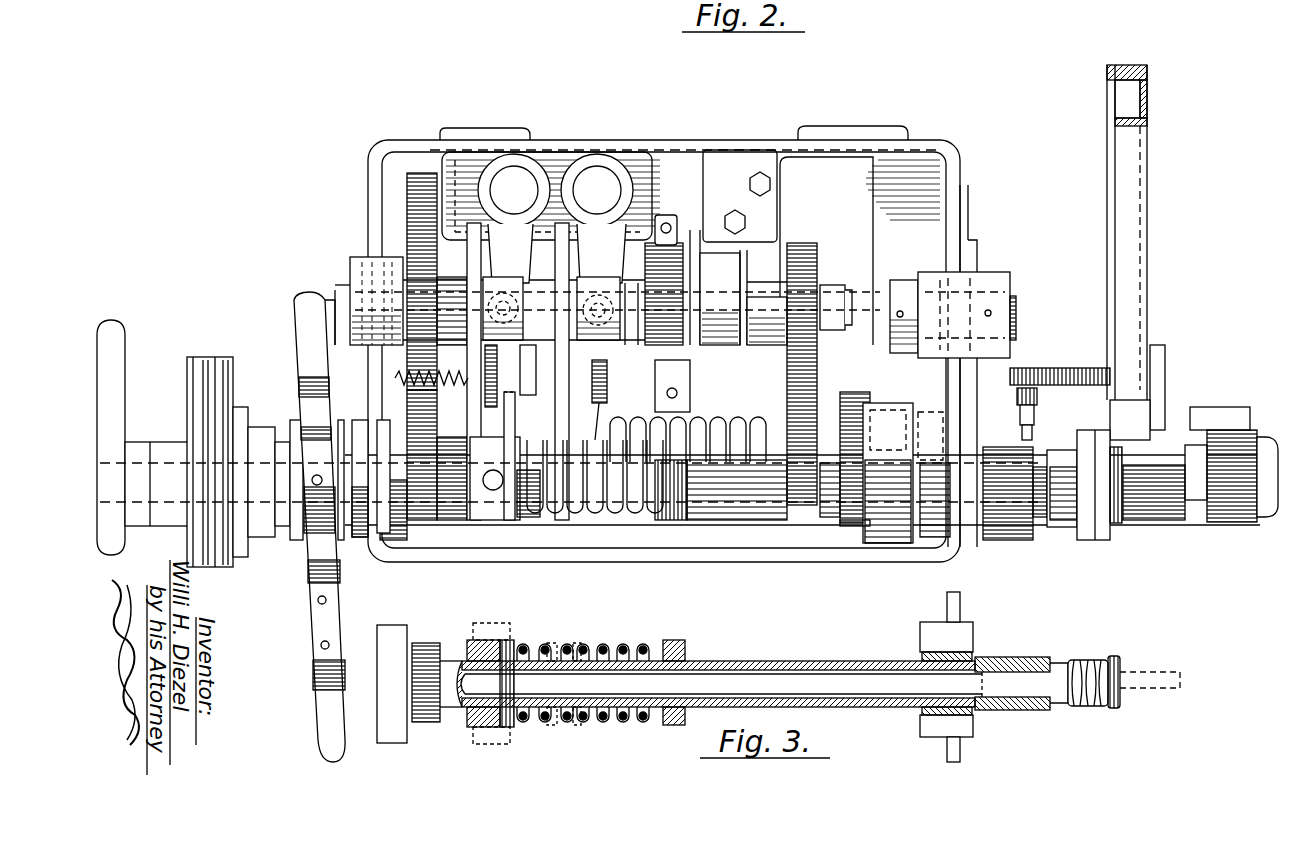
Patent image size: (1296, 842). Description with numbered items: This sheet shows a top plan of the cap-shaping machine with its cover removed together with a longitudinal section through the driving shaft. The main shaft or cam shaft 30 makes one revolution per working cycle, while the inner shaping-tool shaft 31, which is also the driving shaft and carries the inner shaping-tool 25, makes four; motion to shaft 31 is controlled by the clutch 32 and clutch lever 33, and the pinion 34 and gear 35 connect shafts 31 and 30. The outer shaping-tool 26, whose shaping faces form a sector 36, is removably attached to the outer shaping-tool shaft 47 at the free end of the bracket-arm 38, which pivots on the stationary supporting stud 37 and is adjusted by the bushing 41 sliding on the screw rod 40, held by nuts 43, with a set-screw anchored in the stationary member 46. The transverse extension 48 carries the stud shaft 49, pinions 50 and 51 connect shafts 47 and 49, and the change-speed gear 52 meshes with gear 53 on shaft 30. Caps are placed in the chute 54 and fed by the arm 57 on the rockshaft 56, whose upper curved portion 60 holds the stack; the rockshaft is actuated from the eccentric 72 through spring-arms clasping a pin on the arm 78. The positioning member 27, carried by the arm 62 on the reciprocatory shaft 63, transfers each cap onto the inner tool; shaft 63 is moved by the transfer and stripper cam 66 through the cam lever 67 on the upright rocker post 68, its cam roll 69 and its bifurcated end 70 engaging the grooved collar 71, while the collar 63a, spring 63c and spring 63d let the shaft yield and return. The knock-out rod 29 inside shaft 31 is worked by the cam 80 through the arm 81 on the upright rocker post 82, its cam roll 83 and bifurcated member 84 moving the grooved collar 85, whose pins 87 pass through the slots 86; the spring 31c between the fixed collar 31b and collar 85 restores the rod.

In FIG. 3, the inner shaping-tool 25 is at (1101, 713).
In FIG. 2, the outer shaping-tool 26 is at (1093, 542).
In FIG. 2, the positioning member 27 is at (1195, 510).
In FIG. 2, the knock-out rod 29 is at (652, 492).
In FIG. 3, the knock-out rod 29 is at (665, 692).
In FIG. 2, the main shaft 30 is at (380, 295).
In FIG. 2, the inner shaping-tool shaft 31 is at (602, 527).
In FIG. 3, the inner shaping-tool shaft 31 is at (888, 708).
In FIG. 2, the fixed collar 31b is at (692, 527).
In FIG. 3, the fixed collar 31b is at (695, 647).
In FIG. 2, the spring 31c is at (520, 527).
In FIG. 3, the spring 31c is at (646, 648).
In FIG. 2, the clutch 32 is at (296, 425).
In FIG. 2, the clutch lever 33 is at (310, 753).
In FIG. 2, the pinion 34 is at (428, 522).
In FIG. 3, the pinion 34 is at (428, 724).
In FIG. 2, the gear 35 is at (420, 173).
In FIG. 2, the sector 36 is at (1118, 528).
In FIG. 2, the stationary supporting stud 37 is at (1018, 300).
In FIG. 2, the bracket-arm 38 is at (1010, 345).
In FIG. 2, the screw rod 40 is at (1033, 428).
In FIG. 2, the bushing 41 is at (1037, 400).
In FIG. 2, the nuts 43 is at (1045, 370).
In FIG. 2, the stationary member 46 is at (931, 276).
In FIG. 2, the outer shaping-tool shaft 47 is at (932, 538).
In FIG. 3, the outer shaping-tool shaft 47 is at (940, 676).
In FIG. 2, the transverse extension 48 is at (893, 403).
In FIG. 2, the stud shaft 49 is at (930, 436).
In FIG. 2, the pinion 50 is at (858, 527).
In FIG. 2, the pinion 51 is at (852, 392).
In FIG. 2, the gear 52 is at (781, 403).
In FIG. 2, the gear 53 is at (818, 266).
In FIG. 2, the chute 54 is at (1148, 94).
In FIG. 2, the rockshaft 56 is at (720, 521).
In FIG. 2, the arm 57 is at (1166, 360).
In FIG. 2, the upper curved portion 60 is at (1135, 425).
In FIG. 2, the arm 62 is at (1238, 410).
In FIG. 2, the reciprocatory shaft 63 is at (725, 412).
In FIG. 2, the collar 63a is at (537, 370).
In FIG. 2, the spring 63c is at (768, 521).
In FIG. 2, the spring 63d is at (395, 380).
In FIG. 2, the transfer and stripper cam 66 is at (566, 225).
In FIG. 2, the cam lever 67 is at (601, 282).
In FIG. 2, the upright rocker post 68 is at (597, 190).
In FIG. 2, the cam roll 69 is at (607, 372).
In FIG. 2, the bifurcated end 70 is at (603, 410).
In FIG. 2, the grooved collar 71 is at (612, 508).
In FIG. 2, the eccentric 72 is at (695, 240).
In FIG. 2, the arm 78 is at (692, 394).
In FIG. 2, the cam 80 is at (465, 232).
In FIG. 2, the arm 81 is at (508, 282).
In FIG. 2, the upright rocker post 82 is at (514, 190).
In FIG. 2, the cam roll 83 is at (496, 376).
In FIG. 2, the bifurcated member 84 is at (514, 505).
In FIG. 3, the bifurcated member 84 is at (507, 632).
In FIG. 2, the grooved collar 85 is at (500, 526).
In FIG. 3, the grooved collar 85 is at (472, 728).
In FIG. 2, the slots 86 is at (560, 440).
In FIG. 3, the slots 86 is at (560, 707).
In FIG. 2, the pins 87 is at (548, 440).
In FIG. 3, the pins 87 is at (572, 645).